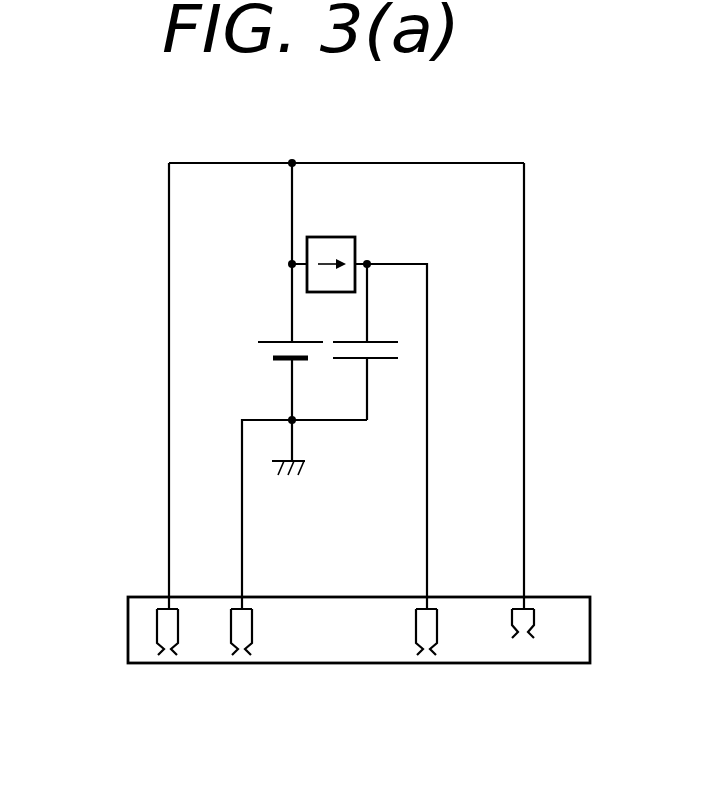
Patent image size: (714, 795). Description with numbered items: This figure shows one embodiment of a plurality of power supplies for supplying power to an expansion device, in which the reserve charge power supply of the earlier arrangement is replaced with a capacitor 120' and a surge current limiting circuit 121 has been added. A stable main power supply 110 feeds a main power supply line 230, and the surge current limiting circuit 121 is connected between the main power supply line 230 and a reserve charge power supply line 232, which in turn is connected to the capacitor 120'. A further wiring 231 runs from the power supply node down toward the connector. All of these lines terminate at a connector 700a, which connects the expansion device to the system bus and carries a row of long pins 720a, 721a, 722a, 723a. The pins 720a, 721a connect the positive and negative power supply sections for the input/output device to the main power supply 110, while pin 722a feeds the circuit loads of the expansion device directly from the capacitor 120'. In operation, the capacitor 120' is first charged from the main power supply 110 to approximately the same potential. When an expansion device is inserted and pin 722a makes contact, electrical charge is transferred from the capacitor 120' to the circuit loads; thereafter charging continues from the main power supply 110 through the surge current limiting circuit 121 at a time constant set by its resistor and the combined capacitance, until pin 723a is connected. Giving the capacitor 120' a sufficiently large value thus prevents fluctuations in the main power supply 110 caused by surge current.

The main power supply line 230 is at (223, 165).
The surge current limiting circuit 121 is at (337, 236).
The reserve charge power supply line 232 is at (400, 262).
The main power supply 110 is at (267, 338).
The capacitor 120' is at (375, 365).
The wiring 231 is at (242, 511).
The connector 700a is at (127, 608).
The long pin 720a is at (182, 615).
The long pin 721a is at (253, 615).
The long pin 722a is at (437, 615).
The long pin 723a is at (540, 613).